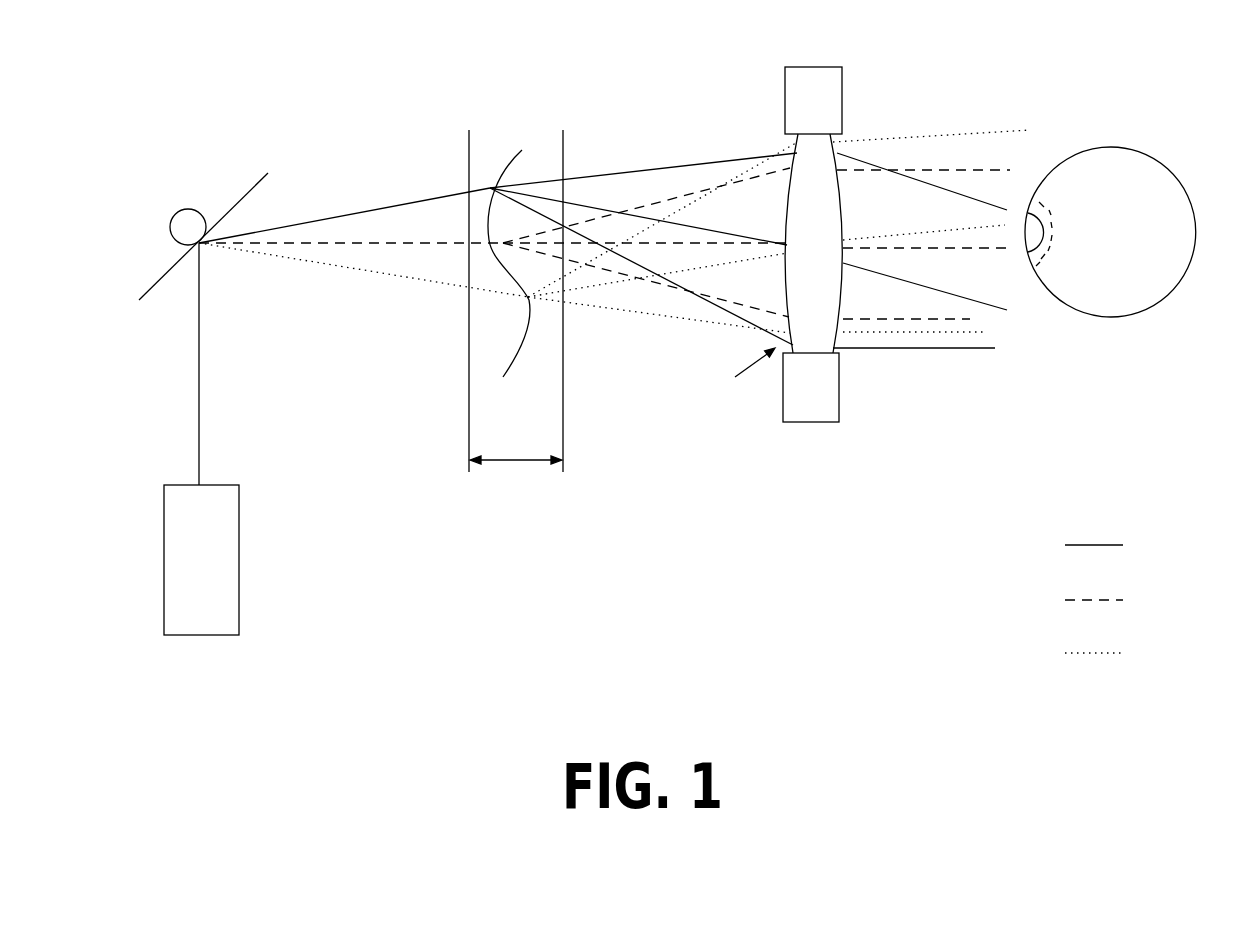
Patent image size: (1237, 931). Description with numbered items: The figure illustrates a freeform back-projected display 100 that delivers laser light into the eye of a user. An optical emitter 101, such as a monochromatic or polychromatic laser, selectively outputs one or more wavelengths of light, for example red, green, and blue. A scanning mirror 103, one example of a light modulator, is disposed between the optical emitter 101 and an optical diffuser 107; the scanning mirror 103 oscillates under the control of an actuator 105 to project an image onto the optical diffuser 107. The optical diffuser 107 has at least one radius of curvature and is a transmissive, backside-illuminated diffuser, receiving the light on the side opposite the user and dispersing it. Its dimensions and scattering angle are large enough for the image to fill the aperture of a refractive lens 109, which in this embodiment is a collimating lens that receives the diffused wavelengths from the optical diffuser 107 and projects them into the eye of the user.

The freeform back-projected display 100 is at (632, 31).
The optical emitter 101 is at (225, 570).
The scanning mirror 103 is at (249, 192).
The actuator 105 is at (182, 220).
The optical diffuser 107 is at (513, 152).
The refractive lens 109 is at (826, 166).